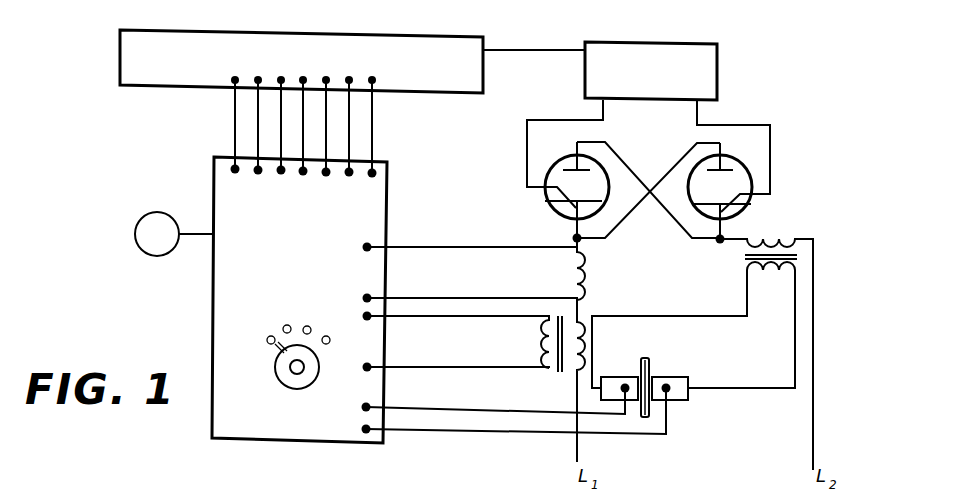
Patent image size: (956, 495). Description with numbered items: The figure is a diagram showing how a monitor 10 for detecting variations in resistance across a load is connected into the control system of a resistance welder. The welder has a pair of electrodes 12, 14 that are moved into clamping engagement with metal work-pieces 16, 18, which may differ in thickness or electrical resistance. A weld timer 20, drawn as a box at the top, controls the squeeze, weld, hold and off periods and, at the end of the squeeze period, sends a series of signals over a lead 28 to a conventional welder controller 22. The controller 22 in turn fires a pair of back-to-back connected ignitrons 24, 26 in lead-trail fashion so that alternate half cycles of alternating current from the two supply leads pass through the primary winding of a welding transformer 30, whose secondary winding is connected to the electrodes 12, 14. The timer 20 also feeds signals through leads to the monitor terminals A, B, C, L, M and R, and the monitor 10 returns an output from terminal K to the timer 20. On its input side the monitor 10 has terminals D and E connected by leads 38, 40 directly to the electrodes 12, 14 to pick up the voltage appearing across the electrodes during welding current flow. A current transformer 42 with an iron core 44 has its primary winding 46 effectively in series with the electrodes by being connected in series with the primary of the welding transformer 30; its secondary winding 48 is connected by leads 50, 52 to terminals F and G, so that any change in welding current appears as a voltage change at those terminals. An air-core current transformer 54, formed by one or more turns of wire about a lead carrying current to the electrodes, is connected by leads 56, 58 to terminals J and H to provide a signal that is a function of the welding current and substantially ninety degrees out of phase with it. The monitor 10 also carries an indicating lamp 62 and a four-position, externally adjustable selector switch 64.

The monitor 10 is at (214, 297).
The electrode 12 is at (682, 379).
The electrode 14 is at (606, 378).
The work-piece 16 is at (653, 368).
The work-piece 18 is at (638, 360).
The weld timer 20 is at (440, 66).
The welder controller 22 is at (718, 71).
The ignitron 24 is at (603, 190).
The ignitron 26 is at (690, 190).
The lead 28 is at (537, 49).
The welding transformer 30 is at (745, 255).
The lead 38 is at (468, 432).
The lead 40 is at (468, 409).
The current transformer 42 is at (490, 378).
The iron core 44 is at (553, 322).
The primary winding 46 is at (577, 323).
The secondary winding 48 is at (541, 353).
The lead 50 is at (458, 368).
The lead 52 is at (532, 324).
The air-core current transformer 54 is at (588, 281).
The lead 56 is at (448, 300).
The lead 58 is at (518, 250).
The indicating lamp 62 is at (155, 218).
The selector switch 64 is at (291, 385).